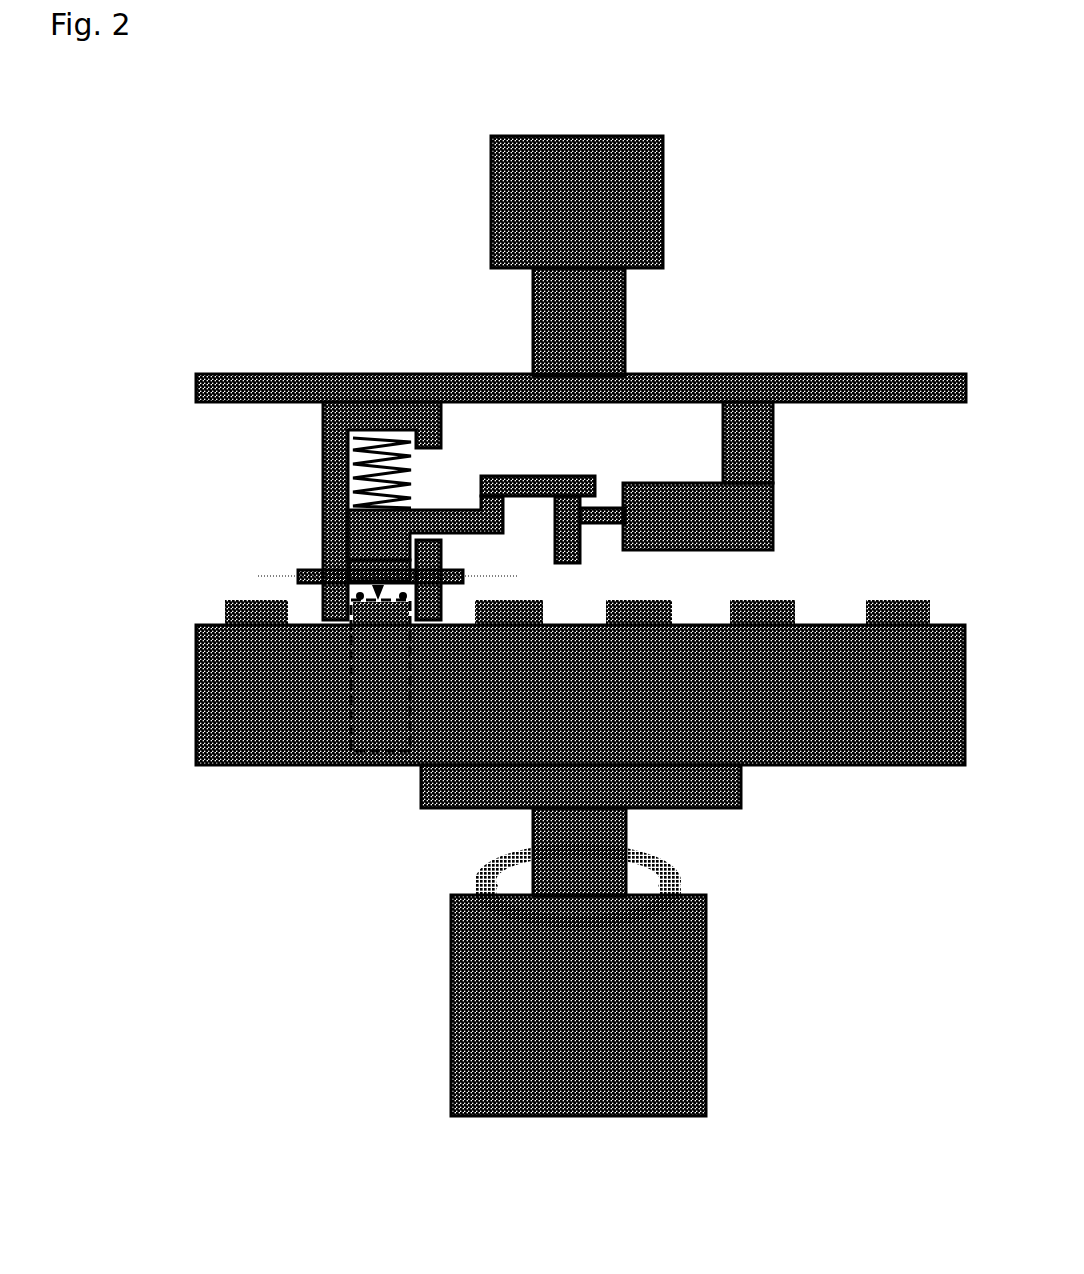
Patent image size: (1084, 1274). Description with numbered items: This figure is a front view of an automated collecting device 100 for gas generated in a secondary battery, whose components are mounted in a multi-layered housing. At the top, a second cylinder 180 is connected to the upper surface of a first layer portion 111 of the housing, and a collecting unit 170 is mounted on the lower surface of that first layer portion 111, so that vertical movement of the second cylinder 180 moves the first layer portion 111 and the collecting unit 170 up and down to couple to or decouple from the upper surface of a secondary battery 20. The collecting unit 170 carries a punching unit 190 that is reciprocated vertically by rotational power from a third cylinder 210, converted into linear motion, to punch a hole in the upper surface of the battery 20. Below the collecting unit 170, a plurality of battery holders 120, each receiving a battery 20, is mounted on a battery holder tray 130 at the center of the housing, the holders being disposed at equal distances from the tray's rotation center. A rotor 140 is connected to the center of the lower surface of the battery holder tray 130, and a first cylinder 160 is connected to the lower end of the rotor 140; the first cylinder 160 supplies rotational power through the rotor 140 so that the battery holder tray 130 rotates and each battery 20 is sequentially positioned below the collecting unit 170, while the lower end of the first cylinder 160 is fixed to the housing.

The automated collecting device 100 is at (277, 237).
The second cylinder 180 is at (657, 197).
The first layer portion 111 is at (207, 367).
The collecting unit 170 is at (313, 443).
The third cylinder 210 is at (765, 492).
The punching unit 190 is at (313, 530).
The battery holder 120 is at (290, 566).
The battery holder tray 130 is at (188, 720).
The secondary battery 20 is at (337, 662).
The rotor 140 is at (525, 847).
The first cylinder 160 is at (443, 963).